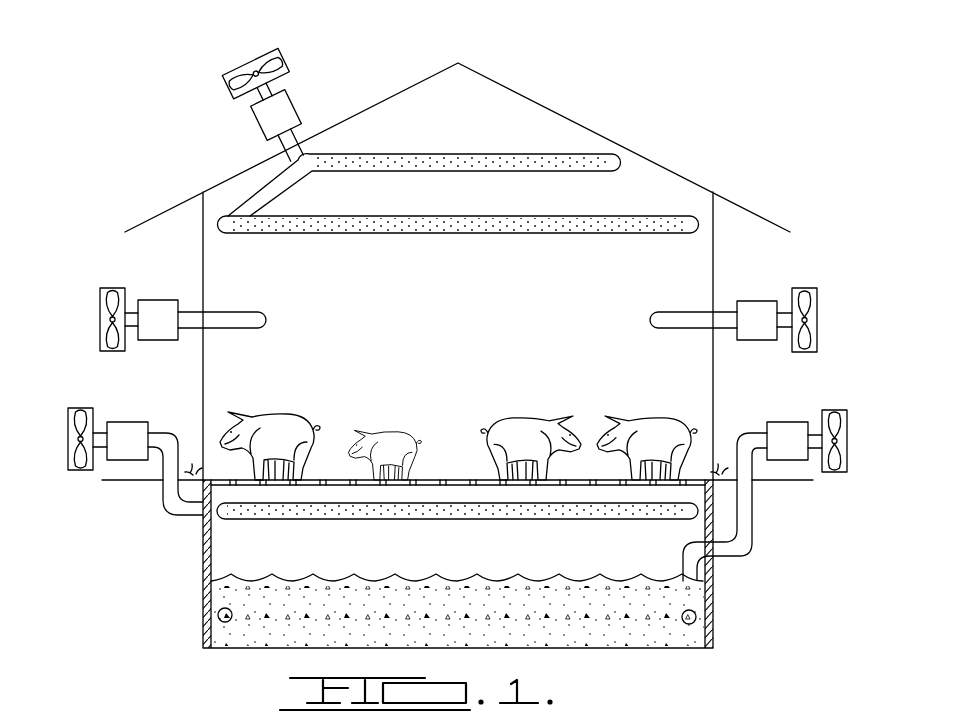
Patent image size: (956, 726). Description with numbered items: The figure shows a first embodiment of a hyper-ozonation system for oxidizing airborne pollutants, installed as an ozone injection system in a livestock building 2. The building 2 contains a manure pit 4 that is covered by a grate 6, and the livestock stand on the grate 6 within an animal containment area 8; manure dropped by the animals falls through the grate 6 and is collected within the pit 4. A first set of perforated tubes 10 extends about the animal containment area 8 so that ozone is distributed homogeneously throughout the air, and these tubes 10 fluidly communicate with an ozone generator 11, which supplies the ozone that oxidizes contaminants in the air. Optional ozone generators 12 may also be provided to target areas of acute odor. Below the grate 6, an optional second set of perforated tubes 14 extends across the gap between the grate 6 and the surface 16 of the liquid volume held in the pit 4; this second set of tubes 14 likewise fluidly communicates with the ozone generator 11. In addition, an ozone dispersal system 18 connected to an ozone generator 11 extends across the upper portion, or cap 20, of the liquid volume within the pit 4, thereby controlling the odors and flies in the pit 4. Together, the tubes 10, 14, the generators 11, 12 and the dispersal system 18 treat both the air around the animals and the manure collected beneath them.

The livestock building 2 is at (518, 132).
The manure pit 4 is at (250, 623).
The grate 6 is at (223, 490).
The animal containment area 8 is at (648, 388).
The perforated tubes 10 is at (673, 217).
The ozone generator 11 is at (288, 108).
The optional ozone generators 12 is at (158, 305).
The second set of perforated tubes 14 is at (370, 513).
The surface of the liquid volume 16 is at (512, 578).
The ozone dispersal system 18 is at (740, 548).
The cap of the liquid volume 20 is at (642, 618).